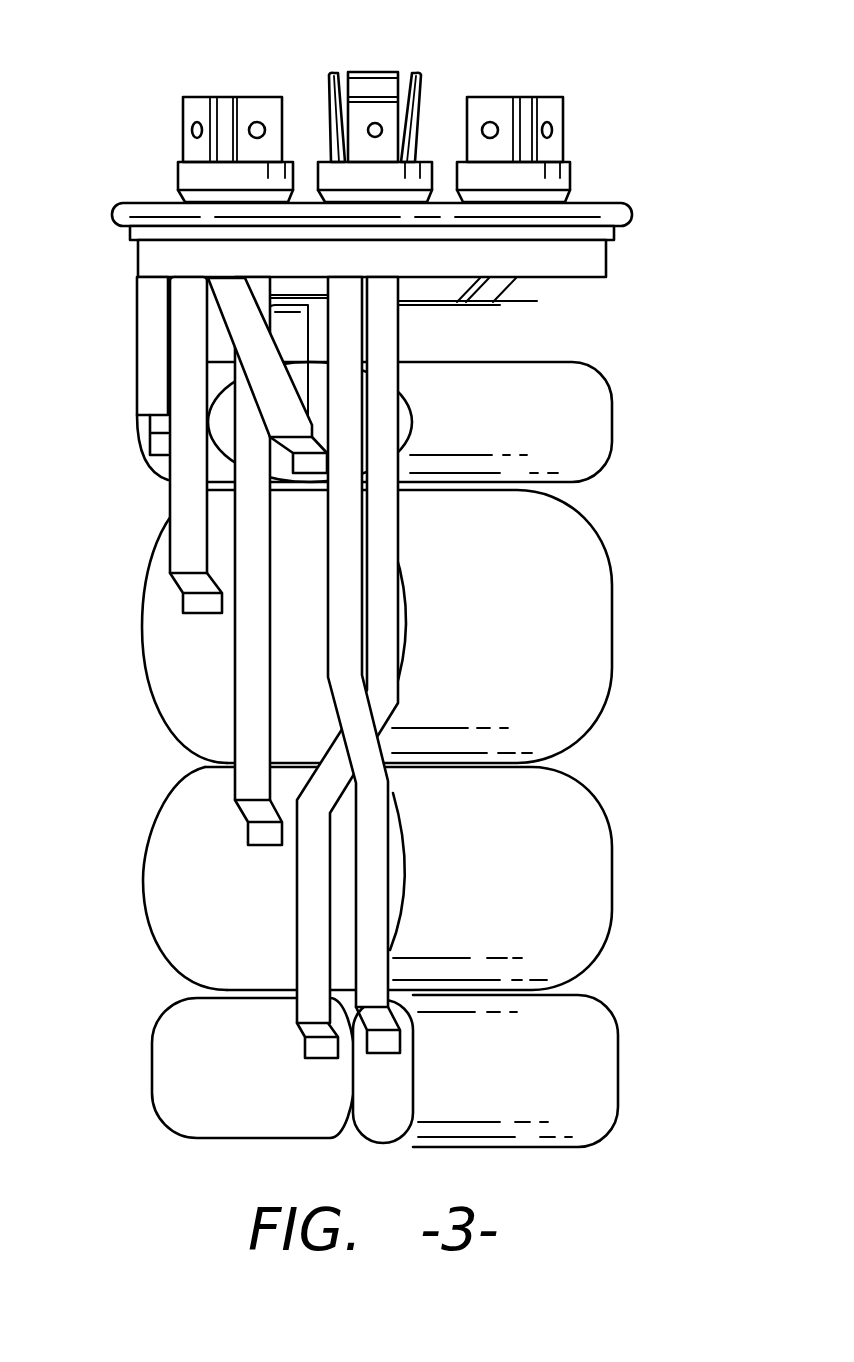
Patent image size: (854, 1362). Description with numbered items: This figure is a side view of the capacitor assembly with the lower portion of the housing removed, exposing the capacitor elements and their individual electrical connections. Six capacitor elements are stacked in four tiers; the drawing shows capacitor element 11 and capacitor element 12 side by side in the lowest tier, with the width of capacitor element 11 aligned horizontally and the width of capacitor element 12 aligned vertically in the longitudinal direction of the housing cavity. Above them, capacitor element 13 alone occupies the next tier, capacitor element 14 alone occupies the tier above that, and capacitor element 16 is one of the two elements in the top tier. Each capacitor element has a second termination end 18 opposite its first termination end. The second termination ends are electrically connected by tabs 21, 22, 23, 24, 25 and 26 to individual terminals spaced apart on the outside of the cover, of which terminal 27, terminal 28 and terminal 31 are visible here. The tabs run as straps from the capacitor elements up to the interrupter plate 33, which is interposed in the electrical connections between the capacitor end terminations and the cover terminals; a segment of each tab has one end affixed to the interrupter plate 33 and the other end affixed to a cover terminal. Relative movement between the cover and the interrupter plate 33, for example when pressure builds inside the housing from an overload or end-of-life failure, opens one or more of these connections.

The capacitor element 11 is at (172, 1065).
The capacitor element 12 is at (587, 1063).
The capacitor element 13 is at (172, 870).
The capacitor element 14 is at (178, 677).
The capacitor element 16 is at (582, 413).
The second termination end 18 is at (198, 700).
The tab 21 is at (312, 917).
The tab 22 is at (373, 860).
The tab 23 is at (253, 623).
The tab 24 is at (183, 492).
The tab 25 is at (153, 317).
The tab 26 is at (227, 313).
The individual terminal 27 is at (505, 118).
The individual terminal 28 is at (380, 115).
The individual terminal 31 is at (267, 118).
The interrupter plate 33 is at (140, 263).